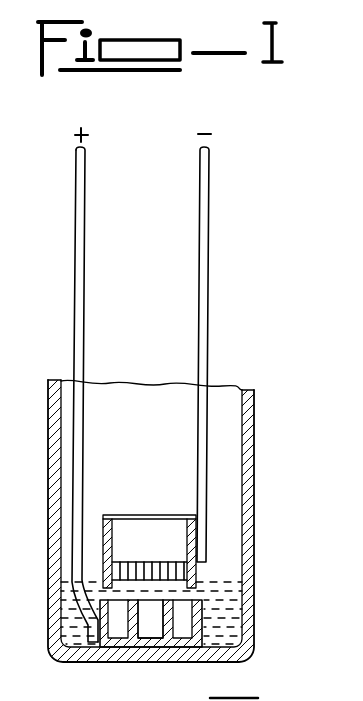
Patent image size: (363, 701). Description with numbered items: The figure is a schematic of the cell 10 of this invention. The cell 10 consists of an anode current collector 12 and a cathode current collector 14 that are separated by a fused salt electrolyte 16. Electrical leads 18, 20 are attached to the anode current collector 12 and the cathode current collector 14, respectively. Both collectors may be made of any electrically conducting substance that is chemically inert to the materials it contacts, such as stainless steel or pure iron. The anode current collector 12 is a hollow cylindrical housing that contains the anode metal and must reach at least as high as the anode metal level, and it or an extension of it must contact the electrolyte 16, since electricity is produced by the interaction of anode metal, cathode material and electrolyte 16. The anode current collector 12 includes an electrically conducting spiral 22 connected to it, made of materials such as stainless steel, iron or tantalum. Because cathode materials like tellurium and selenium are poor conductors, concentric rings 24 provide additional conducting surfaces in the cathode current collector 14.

The cell 10 is at (62, 370).
The anode current collector 12 is at (101, 520).
The cathode current collector 14 is at (130, 642).
The fused salt electrolyte 16 is at (222, 612).
The electrical lead 18 is at (198, 231).
The electrical lead 20 is at (77, 229).
The spiral 22 is at (158, 540).
The concentric rings 24 is at (166, 618).